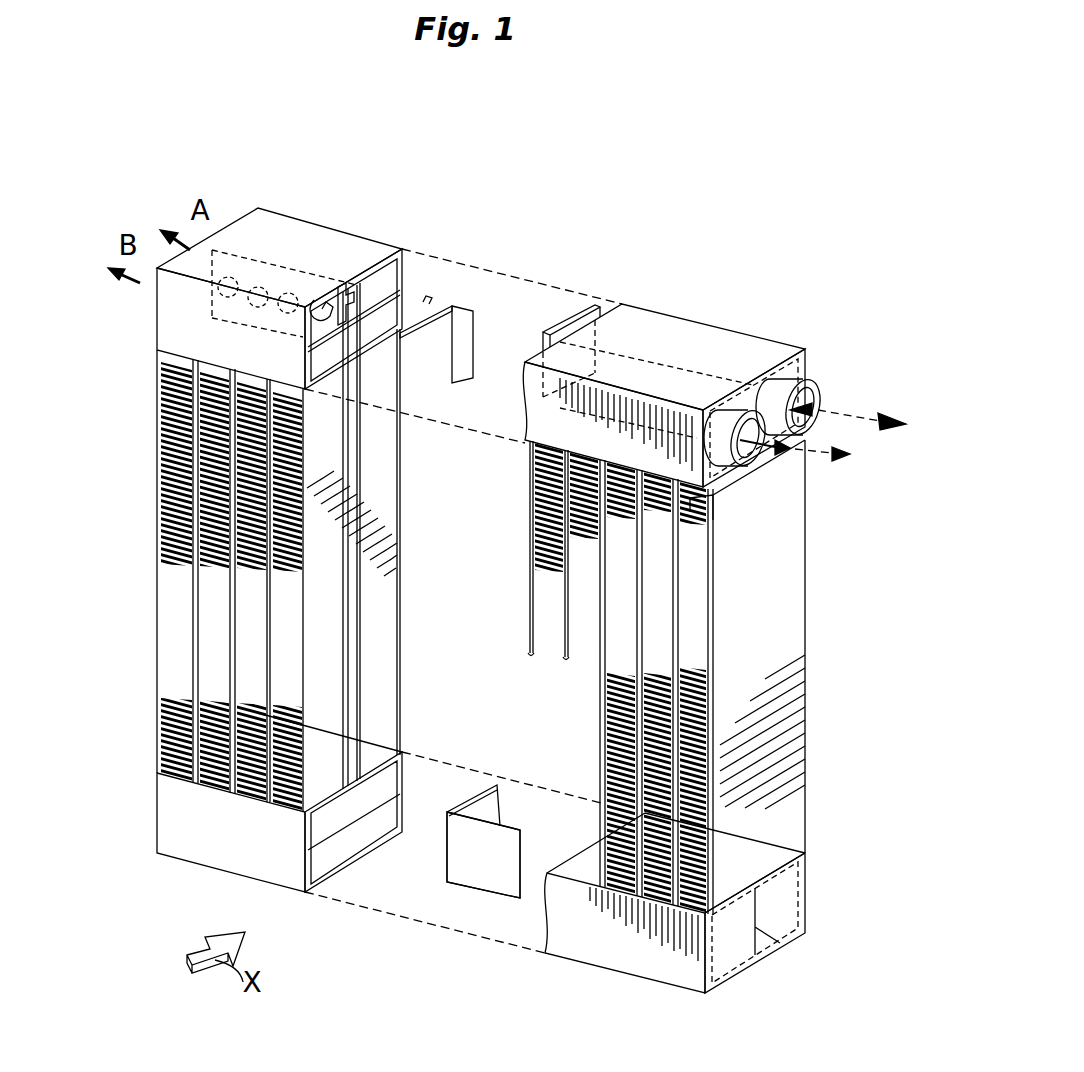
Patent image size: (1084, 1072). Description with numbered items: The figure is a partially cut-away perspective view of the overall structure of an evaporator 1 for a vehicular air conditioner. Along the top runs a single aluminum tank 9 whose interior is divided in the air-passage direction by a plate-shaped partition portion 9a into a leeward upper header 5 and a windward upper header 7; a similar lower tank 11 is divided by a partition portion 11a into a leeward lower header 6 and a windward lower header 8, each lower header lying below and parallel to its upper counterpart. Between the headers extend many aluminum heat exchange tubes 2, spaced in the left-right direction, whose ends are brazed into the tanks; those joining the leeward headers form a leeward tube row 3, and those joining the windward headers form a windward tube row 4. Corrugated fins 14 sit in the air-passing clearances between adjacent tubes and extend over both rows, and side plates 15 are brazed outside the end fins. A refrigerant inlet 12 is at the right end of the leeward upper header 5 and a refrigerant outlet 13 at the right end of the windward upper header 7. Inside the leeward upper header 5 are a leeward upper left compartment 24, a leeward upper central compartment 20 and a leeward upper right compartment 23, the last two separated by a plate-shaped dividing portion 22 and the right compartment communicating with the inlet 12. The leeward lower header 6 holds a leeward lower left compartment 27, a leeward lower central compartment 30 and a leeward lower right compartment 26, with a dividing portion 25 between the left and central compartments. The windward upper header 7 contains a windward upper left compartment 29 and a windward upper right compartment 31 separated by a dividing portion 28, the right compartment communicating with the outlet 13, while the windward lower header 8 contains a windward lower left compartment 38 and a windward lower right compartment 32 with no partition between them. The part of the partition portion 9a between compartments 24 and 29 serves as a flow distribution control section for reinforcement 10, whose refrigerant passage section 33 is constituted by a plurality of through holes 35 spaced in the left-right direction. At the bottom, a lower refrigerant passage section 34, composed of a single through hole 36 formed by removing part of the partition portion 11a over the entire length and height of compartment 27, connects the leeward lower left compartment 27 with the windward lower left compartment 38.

The evaporator 1 is at (722, 236).
The heat exchange tubes 2 is at (217, 640).
The leeward tube row 3 is at (397, 537).
The windward tube row 4 is at (327, 640).
The leeward upper header 5 is at (700, 333).
The leeward lower header 6 is at (790, 920).
The windward upper header 7 is at (538, 422).
The windward lower header 8 is at (620, 955).
The tank 9 is at (641, 282).
The partition portion 9a is at (745, 358).
The flow distribution control section for reinforcement 10 is at (230, 276).
The tank 11 is at (189, 890).
The partition portion 11a is at (783, 957).
The refrigerant inlet 12 is at (811, 400).
The refrigerant outlet 13 is at (760, 466).
The corrugated fins 14 is at (212, 573).
The side plates 15 is at (157, 688).
The leeward upper central compartment 20 is at (503, 238).
The dividing portion 22 is at (565, 318).
The leeward upper right compartment 23 is at (753, 337).
The leeward upper left compartment 24 is at (368, 235).
The dividing portion 25 is at (480, 778).
The leeward lower right compartment 26 is at (808, 857).
The leeward lower left compartment 27 is at (403, 752).
The dividing portion 28 is at (432, 385).
The windward upper left compartment 29 is at (180, 333).
The leeward lower central compartment 30 is at (527, 778).
The windward upper right compartment 31 is at (687, 520).
The windward lower right compartment 32 is at (573, 953).
The refrigerant passage section 33 is at (337, 293).
The lower refrigerant passage section 34 is at (447, 860).
The through holes 35 is at (290, 296).
The through hole 36 is at (447, 828).
The windward lower left compartment 38 is at (192, 852).